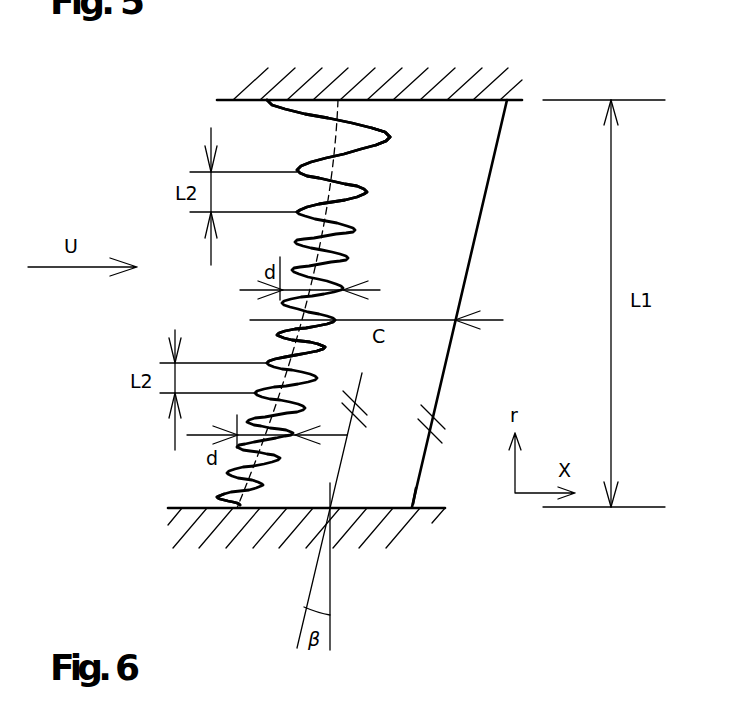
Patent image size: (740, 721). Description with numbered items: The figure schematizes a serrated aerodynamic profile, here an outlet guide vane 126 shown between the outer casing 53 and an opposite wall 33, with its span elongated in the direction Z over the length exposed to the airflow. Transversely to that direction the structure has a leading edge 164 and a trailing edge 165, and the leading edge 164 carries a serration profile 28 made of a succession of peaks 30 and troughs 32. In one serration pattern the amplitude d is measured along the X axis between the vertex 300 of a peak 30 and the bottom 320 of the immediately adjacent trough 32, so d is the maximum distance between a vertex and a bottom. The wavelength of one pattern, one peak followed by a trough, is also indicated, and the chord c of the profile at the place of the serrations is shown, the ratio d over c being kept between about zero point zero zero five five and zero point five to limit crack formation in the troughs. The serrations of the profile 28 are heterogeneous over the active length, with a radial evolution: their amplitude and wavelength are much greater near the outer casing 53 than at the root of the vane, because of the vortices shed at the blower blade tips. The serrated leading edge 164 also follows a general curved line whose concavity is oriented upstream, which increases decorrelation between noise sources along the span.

The serration profile 28 is at (302, 265).
The peak 30 is at (317, 173).
The trough 32 is at (366, 136).
The upper wall 33 is at (287, 83).
The outer casing 53 is at (265, 525).
The blade surface 126 is at (492, 266).
The leading edge 164 is at (220, 505).
The trailing edge 165 is at (416, 487).
The vertex of peak 300 is at (297, 170).
The bottom of trough 320 is at (390, 137).